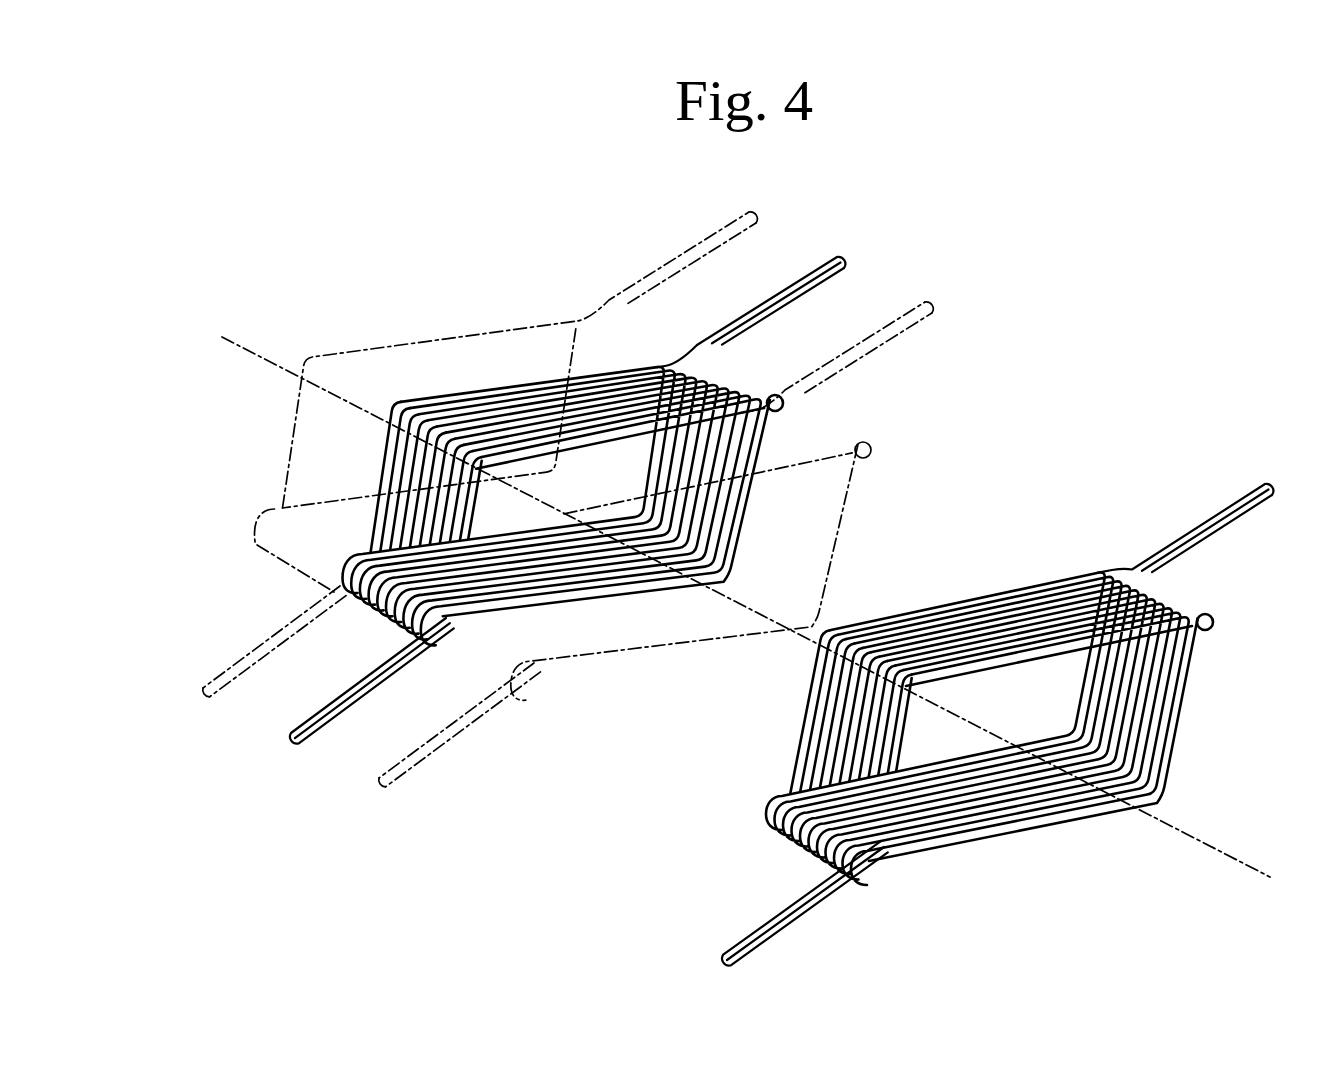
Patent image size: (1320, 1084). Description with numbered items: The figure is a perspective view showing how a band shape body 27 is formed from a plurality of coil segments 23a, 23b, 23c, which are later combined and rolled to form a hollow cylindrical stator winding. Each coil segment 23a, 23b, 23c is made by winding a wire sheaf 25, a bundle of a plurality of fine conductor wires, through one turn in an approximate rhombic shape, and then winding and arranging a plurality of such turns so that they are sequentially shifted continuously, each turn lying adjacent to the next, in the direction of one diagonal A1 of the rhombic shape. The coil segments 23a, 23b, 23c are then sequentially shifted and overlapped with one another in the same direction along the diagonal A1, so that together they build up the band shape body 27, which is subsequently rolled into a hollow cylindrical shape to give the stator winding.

The band shape body 27 is at (601, 474).
The coil segment 23a is at (792, 358).
The coil segment 23b is at (885, 407).
The coil segment 23c is at (700, 304).
The wire sheaf 25 is at (772, 797).
The diagonal A1 is at (1212, 806).